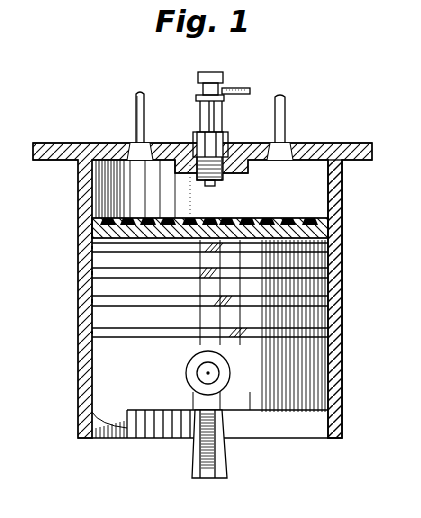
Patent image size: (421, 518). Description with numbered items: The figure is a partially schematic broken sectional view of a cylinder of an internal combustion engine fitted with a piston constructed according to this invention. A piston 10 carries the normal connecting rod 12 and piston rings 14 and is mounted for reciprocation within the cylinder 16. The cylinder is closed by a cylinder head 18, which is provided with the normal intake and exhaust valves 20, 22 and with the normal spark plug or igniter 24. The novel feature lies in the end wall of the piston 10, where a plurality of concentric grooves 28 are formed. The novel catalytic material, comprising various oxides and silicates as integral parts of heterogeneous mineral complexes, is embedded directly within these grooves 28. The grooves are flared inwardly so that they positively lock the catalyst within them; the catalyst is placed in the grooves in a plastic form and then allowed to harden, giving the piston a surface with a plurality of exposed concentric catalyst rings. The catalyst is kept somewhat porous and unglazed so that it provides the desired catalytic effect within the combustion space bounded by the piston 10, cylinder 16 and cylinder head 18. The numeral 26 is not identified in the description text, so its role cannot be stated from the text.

The piston 10 is at (203, 276).
The connecting rod 12 is at (192, 462).
The piston rings 14 is at (100, 266).
The cylinder 16 is at (333, 185).
The cylinder head 18 is at (312, 145).
The intake valve 20 is at (135, 105).
The exhaust valve 22 is at (285, 101).
The spark plug or igniter 24 is at (200, 103).
The nozzles 26 is at (288, 220).
The grooves 28 is at (330, 226).